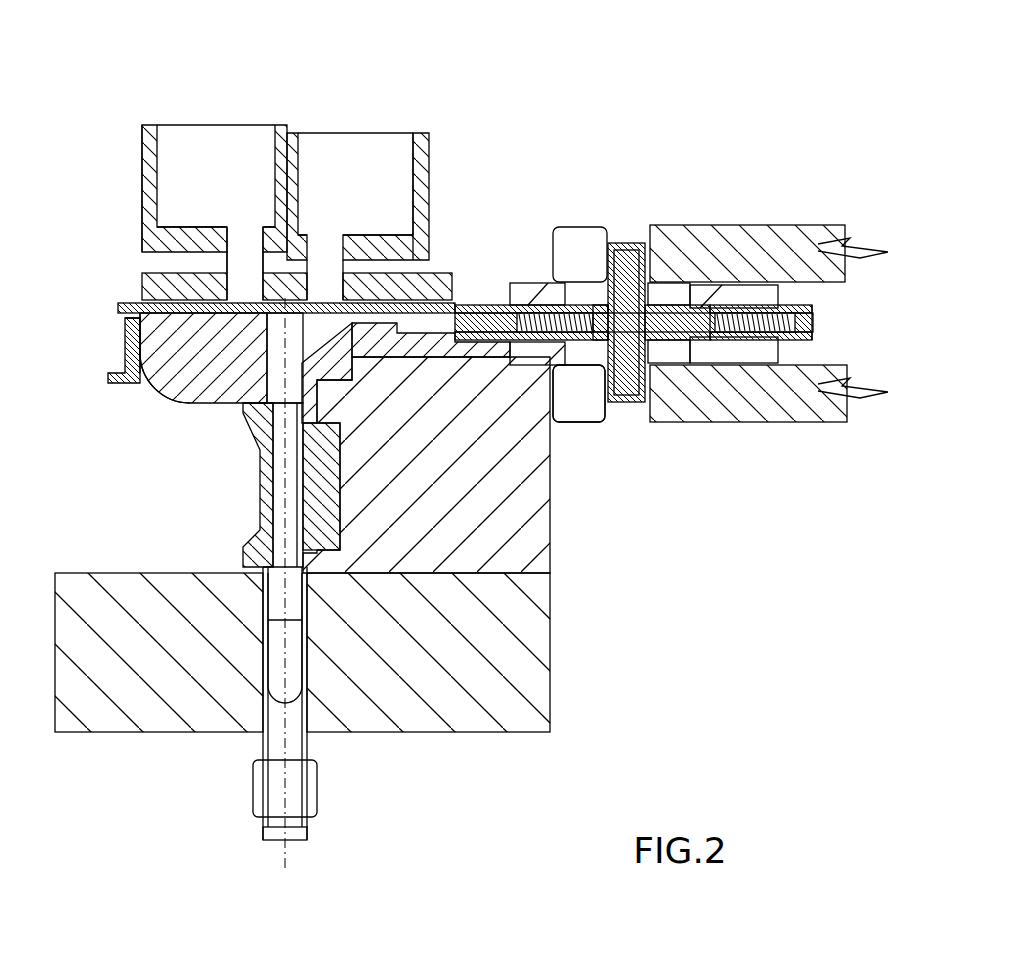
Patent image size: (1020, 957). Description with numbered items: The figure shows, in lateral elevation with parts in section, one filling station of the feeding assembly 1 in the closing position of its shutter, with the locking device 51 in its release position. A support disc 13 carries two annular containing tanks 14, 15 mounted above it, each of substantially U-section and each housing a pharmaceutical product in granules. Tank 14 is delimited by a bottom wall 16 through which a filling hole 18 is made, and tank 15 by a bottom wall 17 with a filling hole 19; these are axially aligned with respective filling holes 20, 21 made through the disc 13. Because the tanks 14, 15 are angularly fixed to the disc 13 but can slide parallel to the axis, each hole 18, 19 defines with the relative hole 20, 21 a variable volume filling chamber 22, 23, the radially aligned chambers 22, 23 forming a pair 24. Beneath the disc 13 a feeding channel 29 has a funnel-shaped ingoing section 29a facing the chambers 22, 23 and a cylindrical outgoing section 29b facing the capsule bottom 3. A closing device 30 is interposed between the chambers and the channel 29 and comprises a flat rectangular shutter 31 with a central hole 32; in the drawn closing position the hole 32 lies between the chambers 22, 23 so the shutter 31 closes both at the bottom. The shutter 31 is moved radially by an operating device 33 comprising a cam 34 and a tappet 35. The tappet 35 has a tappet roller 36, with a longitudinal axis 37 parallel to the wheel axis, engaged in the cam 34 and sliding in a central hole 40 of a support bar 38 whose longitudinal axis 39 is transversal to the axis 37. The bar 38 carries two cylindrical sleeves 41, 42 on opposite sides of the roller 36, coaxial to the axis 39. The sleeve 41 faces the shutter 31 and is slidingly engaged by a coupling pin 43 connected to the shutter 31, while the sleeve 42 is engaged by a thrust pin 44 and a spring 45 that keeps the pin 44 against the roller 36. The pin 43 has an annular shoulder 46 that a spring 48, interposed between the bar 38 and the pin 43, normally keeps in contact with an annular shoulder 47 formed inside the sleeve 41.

The feeding assembly 1 is at (707, 107).
The bottom 3 is at (278, 696).
The support disc 13 is at (140, 288).
The containing tank 14 is at (432, 139).
The containing tank 15 is at (142, 131).
The bottom wall 16 is at (380, 246).
The bottom wall 17 is at (190, 236).
The filling hole 18 is at (314, 236).
The filling hole 19 is at (253, 228).
The filling hole 20 is at (310, 291).
The filling hole 21 is at (254, 286).
The filling chamber 22 is at (330, 246).
The filling chamber 23 is at (237, 258).
The pair of chambers 24 is at (110, 210).
The feeding channel 29 is at (246, 480).
The ingoing section 29a is at (168, 328).
The outgoing section 29b is at (306, 716).
The closing device 30 is at (166, 373).
The flat shutter 31 is at (122, 312).
The central hole 32 is at (210, 404).
The operating device 33 is at (658, 198).
The cam 34 is at (623, 228).
The tappet 35 is at (765, 432).
The tappet roller 36 is at (641, 408).
The longitudinal axis 37 is at (643, 404).
The support bar 38 is at (800, 240).
The longitudinal axis 39 is at (815, 318).
The central hole 40 is at (662, 300).
The cylindrical sleeve 41 is at (545, 303).
The cylindrical sleeve 42 is at (793, 292).
The coupling pin 43 is at (406, 341).
The thrust pin 44 is at (716, 366).
The spring 45 is at (523, 283).
The annular shoulder 46 is at (576, 423).
The annular shoulder 47 is at (579, 393).
The spring 48 is at (790, 422).
The locking device 51 is at (123, 336).